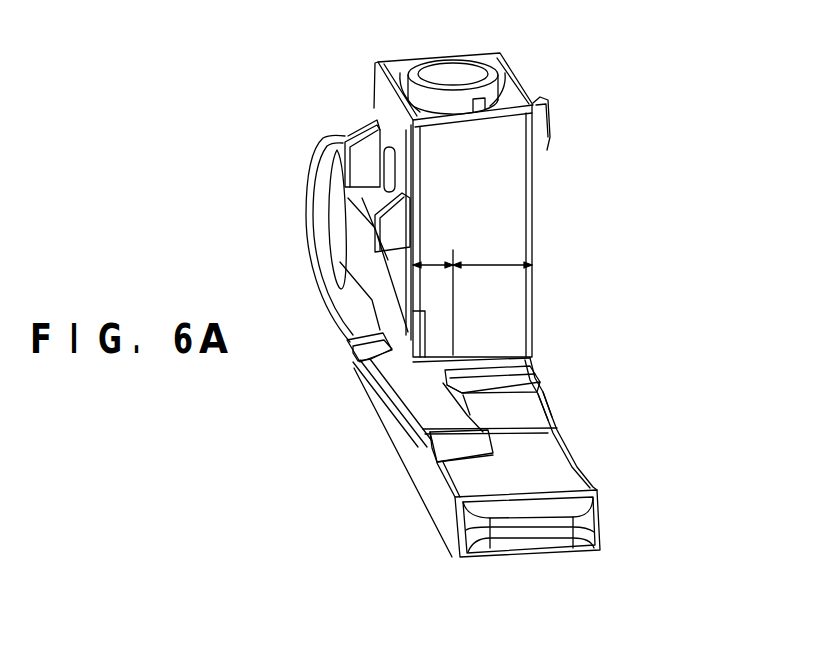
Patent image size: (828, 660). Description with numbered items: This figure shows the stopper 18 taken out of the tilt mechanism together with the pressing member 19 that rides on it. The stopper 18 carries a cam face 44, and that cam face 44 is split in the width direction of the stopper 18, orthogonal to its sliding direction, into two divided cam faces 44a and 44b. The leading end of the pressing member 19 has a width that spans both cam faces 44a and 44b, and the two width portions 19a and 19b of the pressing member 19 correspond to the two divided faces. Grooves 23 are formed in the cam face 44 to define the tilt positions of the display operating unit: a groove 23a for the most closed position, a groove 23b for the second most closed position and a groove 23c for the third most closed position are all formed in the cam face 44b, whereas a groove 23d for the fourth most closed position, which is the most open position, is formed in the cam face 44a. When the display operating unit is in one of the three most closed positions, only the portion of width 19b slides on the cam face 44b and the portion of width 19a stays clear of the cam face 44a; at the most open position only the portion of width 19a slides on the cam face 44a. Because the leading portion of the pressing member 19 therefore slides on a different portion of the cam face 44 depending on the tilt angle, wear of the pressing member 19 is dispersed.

The stopper 18 is at (387, 448).
The pressing member 19 is at (520, 188).
The width portion of pressing member 19a is at (435, 262).
The width portion of pressing member 19b is at (490, 262).
The groove 23 is at (540, 417).
The groove 23a is at (498, 355).
The groove 23b is at (510, 380).
The groove 23c is at (537, 402).
The groove 23d is at (458, 466).
The cam face 44 is at (563, 472).
The cam face 44a is at (407, 383).
The cam face 44b is at (540, 414).